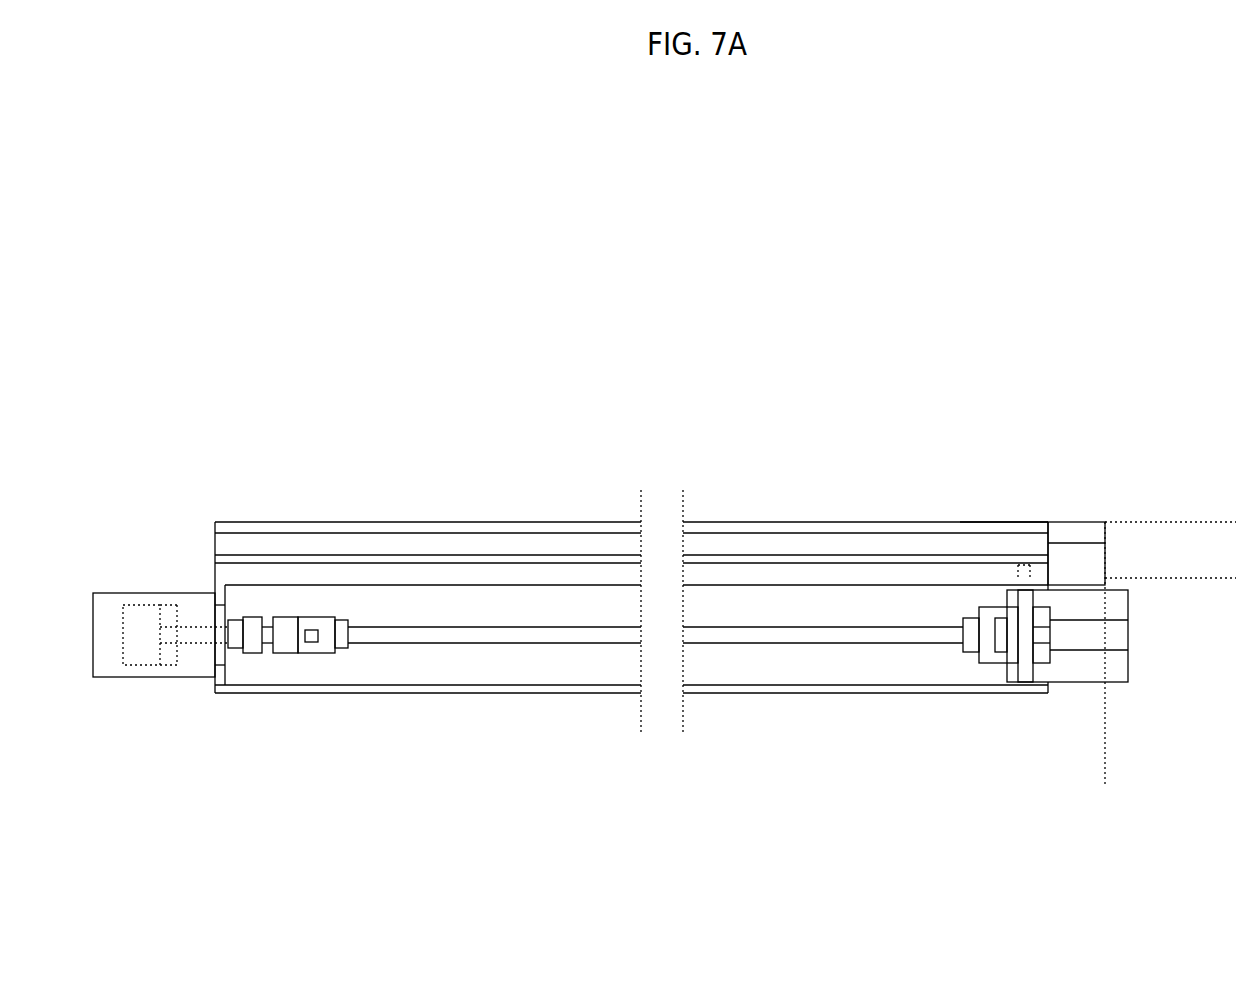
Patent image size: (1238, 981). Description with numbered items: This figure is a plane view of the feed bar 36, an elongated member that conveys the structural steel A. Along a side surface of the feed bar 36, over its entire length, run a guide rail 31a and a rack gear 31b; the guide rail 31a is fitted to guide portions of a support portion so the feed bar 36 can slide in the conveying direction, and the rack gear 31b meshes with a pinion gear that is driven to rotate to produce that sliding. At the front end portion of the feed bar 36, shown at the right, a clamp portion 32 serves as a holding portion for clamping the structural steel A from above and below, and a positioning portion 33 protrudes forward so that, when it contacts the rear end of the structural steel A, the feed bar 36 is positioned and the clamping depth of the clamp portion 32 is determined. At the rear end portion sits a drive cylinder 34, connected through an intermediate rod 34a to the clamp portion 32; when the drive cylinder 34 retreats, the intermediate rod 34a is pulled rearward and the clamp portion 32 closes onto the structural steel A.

The guide rail 31a is at (800, 542).
The rack gear 31b is at (913, 573).
The clamp portion 32 is at (1078, 683).
The positioning portion 33 is at (1075, 533).
The drive cylinder 34 is at (143, 593).
The intermediate rod 34a is at (477, 635).
The feed bar 36 is at (983, 520).
The structural steel A is at (1183, 522).